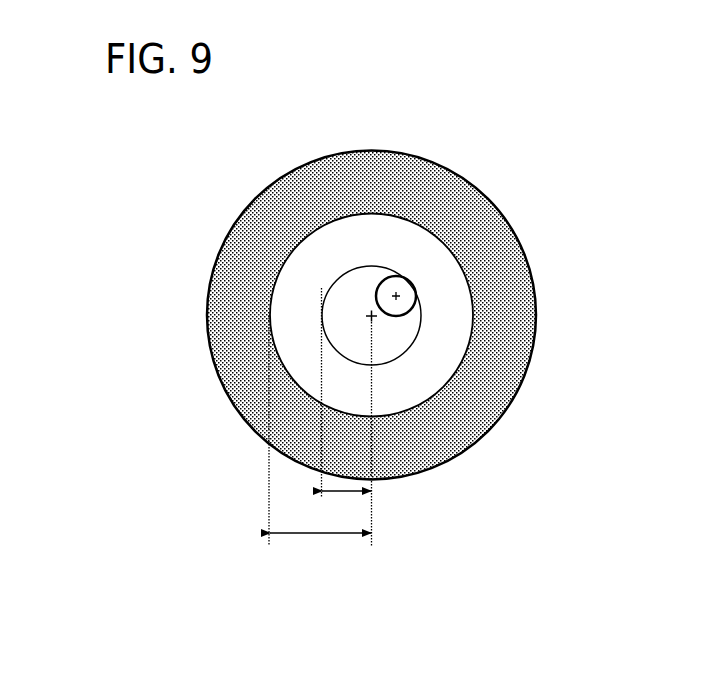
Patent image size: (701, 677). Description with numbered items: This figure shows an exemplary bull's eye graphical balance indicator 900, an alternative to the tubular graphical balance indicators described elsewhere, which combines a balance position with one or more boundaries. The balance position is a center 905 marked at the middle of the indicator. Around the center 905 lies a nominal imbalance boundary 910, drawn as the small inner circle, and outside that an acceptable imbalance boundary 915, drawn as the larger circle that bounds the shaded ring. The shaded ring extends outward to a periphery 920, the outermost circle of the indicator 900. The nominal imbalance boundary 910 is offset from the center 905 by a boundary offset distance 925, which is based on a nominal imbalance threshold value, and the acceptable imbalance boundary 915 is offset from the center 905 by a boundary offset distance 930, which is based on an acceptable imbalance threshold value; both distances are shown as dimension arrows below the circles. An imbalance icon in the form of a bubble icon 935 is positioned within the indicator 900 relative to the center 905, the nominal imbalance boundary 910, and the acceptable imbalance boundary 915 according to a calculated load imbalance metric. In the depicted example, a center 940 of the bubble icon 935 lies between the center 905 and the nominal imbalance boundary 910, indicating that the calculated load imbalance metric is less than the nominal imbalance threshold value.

The bull's eye graphical balance indicator 900 is at (518, 151).
The center 905 is at (368, 314).
The nominal imbalance boundary 910 is at (329, 292).
The acceptable imbalance boundary 915 is at (297, 241).
The periphery 920 is at (222, 248).
The boundary offset distance 925 is at (349, 491).
The boundary offset distance 930 is at (313, 533).
The bubble icon 935 is at (397, 292).
The center of bubble icon 940 is at (414, 303).